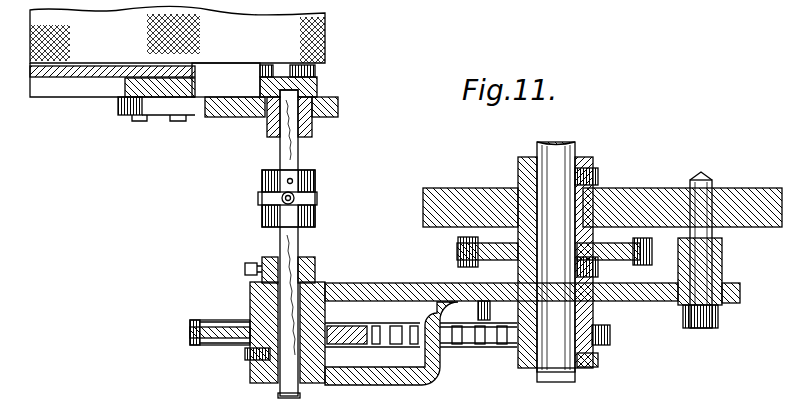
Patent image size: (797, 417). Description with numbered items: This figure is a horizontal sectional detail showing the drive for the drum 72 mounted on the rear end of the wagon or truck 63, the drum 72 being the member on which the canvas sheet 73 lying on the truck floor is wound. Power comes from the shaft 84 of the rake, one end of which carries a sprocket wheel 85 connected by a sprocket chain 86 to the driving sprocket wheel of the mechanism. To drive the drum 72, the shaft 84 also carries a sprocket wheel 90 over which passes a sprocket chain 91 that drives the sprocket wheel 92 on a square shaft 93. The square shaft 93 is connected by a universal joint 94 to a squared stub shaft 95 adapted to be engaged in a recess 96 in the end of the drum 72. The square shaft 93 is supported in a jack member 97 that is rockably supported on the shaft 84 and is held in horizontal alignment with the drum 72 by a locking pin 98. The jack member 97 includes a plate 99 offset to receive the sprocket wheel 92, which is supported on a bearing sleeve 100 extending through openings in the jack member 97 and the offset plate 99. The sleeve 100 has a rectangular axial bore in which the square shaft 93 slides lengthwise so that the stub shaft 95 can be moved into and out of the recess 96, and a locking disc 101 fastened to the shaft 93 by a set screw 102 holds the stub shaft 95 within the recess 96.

The canvas sheet 73 is at (322, 34).
The drum 72 is at (317, 73).
The wagon or truck 63 is at (90, 68).
The recess 96 is at (270, 102).
The squared stub shaft 95 is at (300, 150).
The universal joint 94 is at (317, 192).
The square shaft 93 is at (300, 238).
The locking disc 101 is at (315, 263).
The set screw 102 is at (252, 259).
The sprocket wheel 92 is at (252, 362).
The jack member 97 is at (383, 271).
The plate 99 is at (405, 368).
The bearing sleeve 100 is at (302, 385).
The shaft 84 is at (577, 150).
The sprocket chain 86 is at (458, 246).
The sprocket wheel 85 is at (515, 262).
The sprocket chain 91 is at (610, 343).
The sprocket wheel 90 is at (596, 365).
The locking pin 98 is at (718, 327).